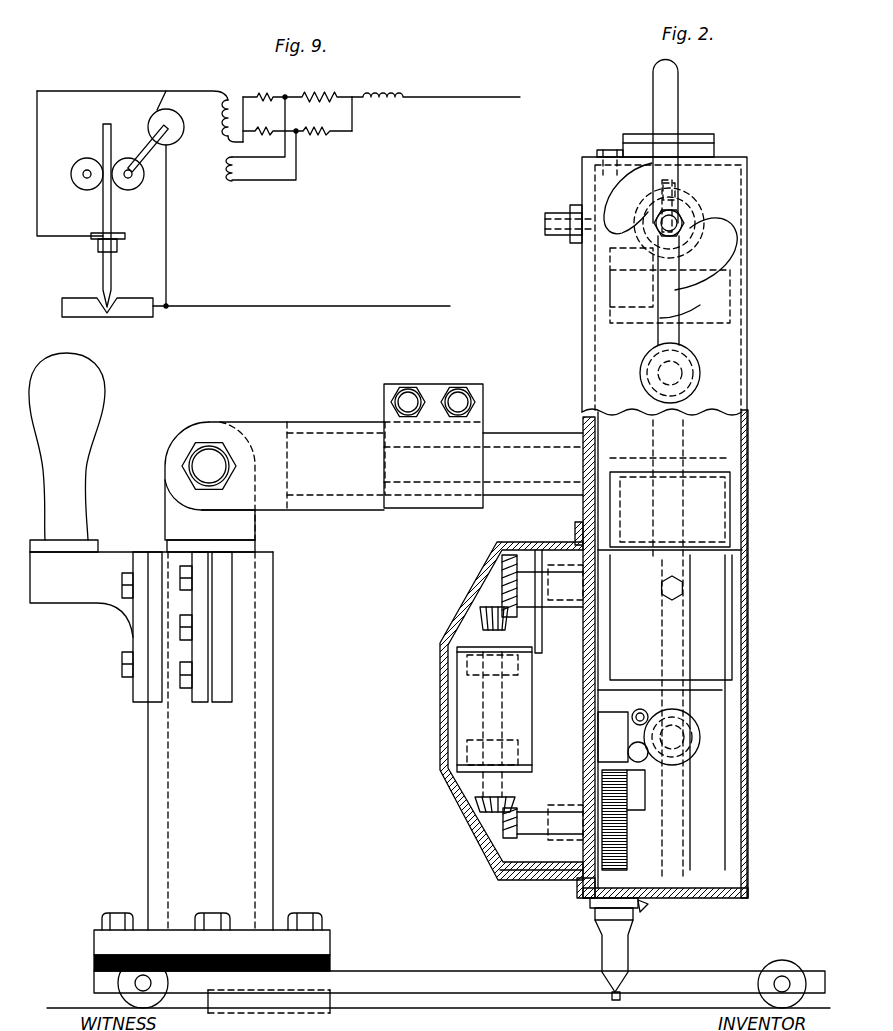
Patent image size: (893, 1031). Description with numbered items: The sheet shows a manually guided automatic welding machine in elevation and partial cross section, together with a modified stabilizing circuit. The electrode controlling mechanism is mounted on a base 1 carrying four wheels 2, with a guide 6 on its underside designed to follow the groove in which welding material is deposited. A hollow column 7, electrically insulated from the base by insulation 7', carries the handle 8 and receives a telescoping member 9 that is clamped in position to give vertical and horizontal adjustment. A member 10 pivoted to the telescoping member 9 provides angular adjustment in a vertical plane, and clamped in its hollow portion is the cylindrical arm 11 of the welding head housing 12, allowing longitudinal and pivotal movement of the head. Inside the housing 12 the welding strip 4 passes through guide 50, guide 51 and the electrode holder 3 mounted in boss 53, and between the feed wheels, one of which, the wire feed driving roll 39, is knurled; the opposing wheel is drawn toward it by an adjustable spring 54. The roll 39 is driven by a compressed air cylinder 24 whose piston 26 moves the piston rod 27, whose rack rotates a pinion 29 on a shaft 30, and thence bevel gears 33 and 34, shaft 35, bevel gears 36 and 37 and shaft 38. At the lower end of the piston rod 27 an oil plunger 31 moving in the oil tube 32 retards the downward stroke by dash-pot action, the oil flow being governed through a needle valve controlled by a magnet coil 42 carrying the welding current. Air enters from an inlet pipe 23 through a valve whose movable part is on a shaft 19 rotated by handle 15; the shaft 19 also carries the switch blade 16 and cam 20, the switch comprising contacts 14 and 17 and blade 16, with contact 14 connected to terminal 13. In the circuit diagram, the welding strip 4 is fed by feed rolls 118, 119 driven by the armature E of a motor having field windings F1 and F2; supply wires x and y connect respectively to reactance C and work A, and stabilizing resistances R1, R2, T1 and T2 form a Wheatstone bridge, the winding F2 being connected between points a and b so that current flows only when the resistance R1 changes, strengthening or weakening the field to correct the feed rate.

In FIG. 2, the base 1 is at (442, 972).
In FIG. 2, the wheels 2 is at (784, 962).
In FIG. 9, the electrode holder 3 is at (126, 240).
In FIG. 2, the electrode holder 3 is at (608, 946).
In FIG. 9, the welding strip 4 is at (100, 215).
In FIG. 2, the welding strip 4 is at (619, 993).
In FIG. 2, the guide 6 is at (325, 992).
In FIG. 2, the column 7 is at (151, 741).
In FIG. 2, the insulation 7' is at (229, 942).
In FIG. 2, the handle 8 is at (92, 398).
In FIG. 2, the telescoping member 9 is at (210, 528).
In FIG. 2, the member 10 is at (272, 436).
In FIG. 2, the cylindrical arm 11 is at (518, 455).
In FIG. 2, the welding head housing 12 is at (582, 333).
In FIG. 2, the terminal 13 is at (679, 104).
In FIG. 2, the contact 14 is at (697, 281).
In FIG. 2, the handle 15 is at (692, 368).
In FIG. 2, the switch blade 16 is at (672, 320).
In FIG. 2, the contact 17 is at (628, 198).
In FIG. 2, the shaft 19 is at (676, 222).
In FIG. 2, the cam 20 is at (684, 186).
In FIG. 2, the inlet pipe 23 is at (558, 236).
In FIG. 2, the cylinder 24 is at (715, 517).
In FIG. 2, the piston 26 is at (670, 285).
In FIG. 2, the piston rod 27 is at (682, 440).
In FIG. 2, the pinion 29 is at (690, 600).
In FIG. 2, the shaft 30 is at (575, 592).
In FIG. 2, the oil plunger 31 is at (700, 650).
In FIG. 2, the oil tube 32 is at (686, 784).
In FIG. 2, the bevel gear 33 is at (505, 592).
In FIG. 2, the bevel gear 34 is at (480, 625).
In FIG. 2, the shaft 35 is at (460, 708).
In FIG. 2, the bevel gear 36 is at (478, 806).
In FIG. 2, the bevel gear 37 is at (505, 832).
In FIG. 2, the shaft 38 is at (541, 885).
In FIG. 2, the wire feed driving roll 39 is at (580, 892).
In FIG. 2, the magnet coil 42 is at (720, 612).
In FIG. 2, the guide 50 is at (600, 152).
In FIG. 2, the guide 51 is at (620, 885).
In FIG. 2, the boss 53 is at (646, 906).
In FIG. 2, the adjustable spring 54 is at (633, 714).
In FIG. 9, the feed roll 118 is at (132, 190).
In FIG. 9, the feed roll 119 is at (81, 166).
In FIG. 9, the work A is at (79, 303).
In FIG. 9, the armature E is at (178, 114).
In FIG. 9, the field winding F1 is at (221, 109).
In FIG. 9, the field winding F2 is at (221, 166).
In FIG. 9, the stabilizing resistance R1 is at (322, 93).
In FIG. 9, the stabilizing resistance R2 is at (266, 92).
In FIG. 9, the stabilizing resistance T1 is at (314, 129).
In FIG. 9, the stabilizing resistance T2 is at (269, 121).
In FIG. 9, the reactance C is at (386, 96).
In FIG. 9, the bridge point a is at (285, 97).
In FIG. 9, the bridge point b is at (298, 134).
In FIG. 9, the supply wire x is at (463, 84).
In FIG. 9, the supply wire y is at (415, 294).